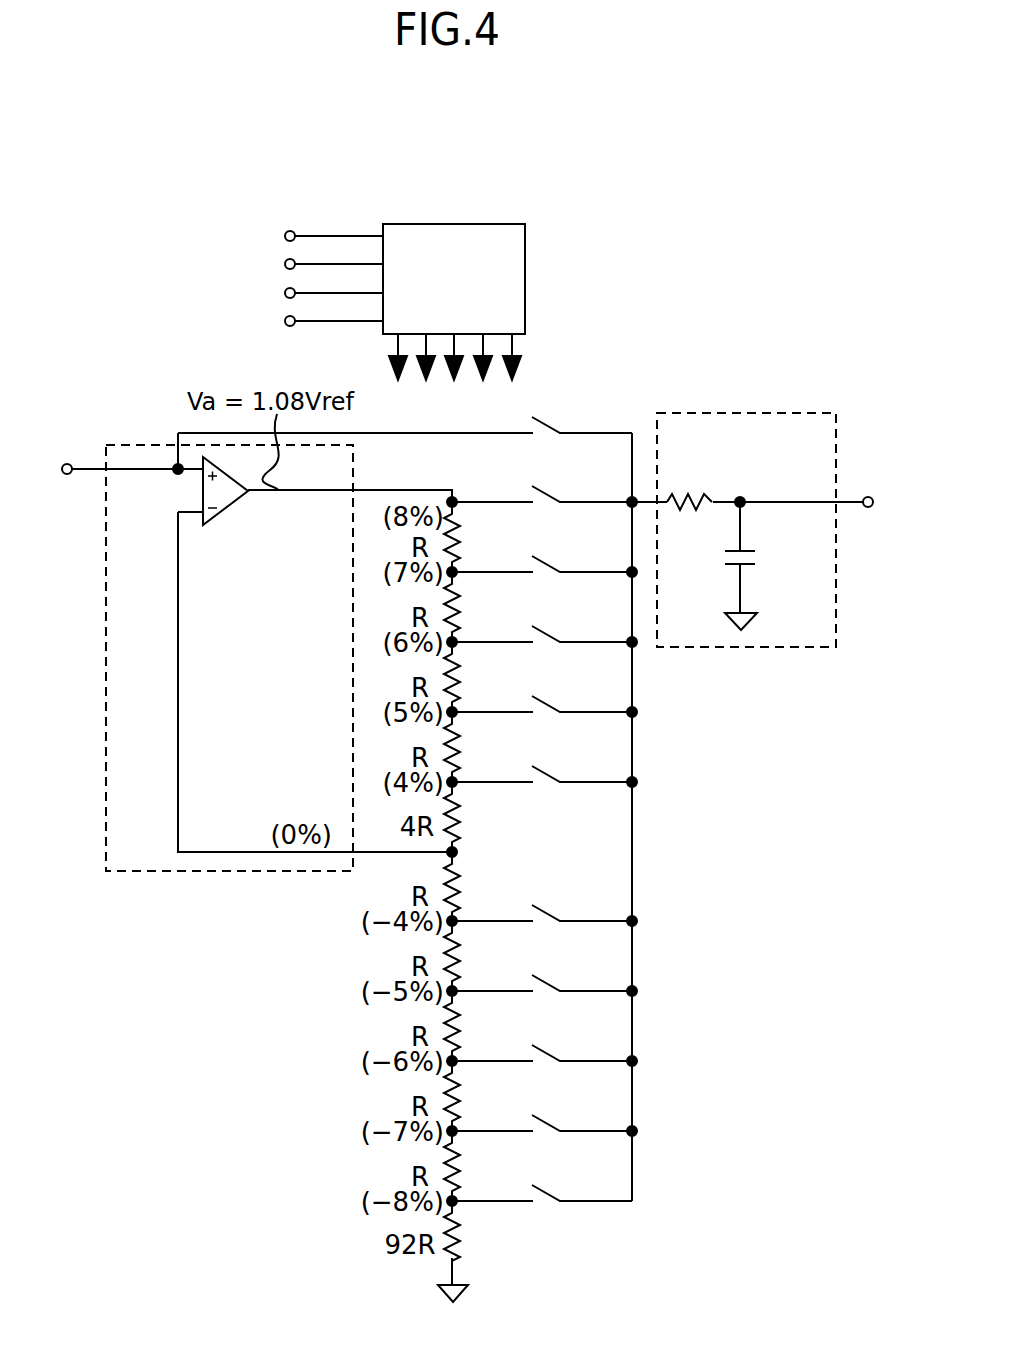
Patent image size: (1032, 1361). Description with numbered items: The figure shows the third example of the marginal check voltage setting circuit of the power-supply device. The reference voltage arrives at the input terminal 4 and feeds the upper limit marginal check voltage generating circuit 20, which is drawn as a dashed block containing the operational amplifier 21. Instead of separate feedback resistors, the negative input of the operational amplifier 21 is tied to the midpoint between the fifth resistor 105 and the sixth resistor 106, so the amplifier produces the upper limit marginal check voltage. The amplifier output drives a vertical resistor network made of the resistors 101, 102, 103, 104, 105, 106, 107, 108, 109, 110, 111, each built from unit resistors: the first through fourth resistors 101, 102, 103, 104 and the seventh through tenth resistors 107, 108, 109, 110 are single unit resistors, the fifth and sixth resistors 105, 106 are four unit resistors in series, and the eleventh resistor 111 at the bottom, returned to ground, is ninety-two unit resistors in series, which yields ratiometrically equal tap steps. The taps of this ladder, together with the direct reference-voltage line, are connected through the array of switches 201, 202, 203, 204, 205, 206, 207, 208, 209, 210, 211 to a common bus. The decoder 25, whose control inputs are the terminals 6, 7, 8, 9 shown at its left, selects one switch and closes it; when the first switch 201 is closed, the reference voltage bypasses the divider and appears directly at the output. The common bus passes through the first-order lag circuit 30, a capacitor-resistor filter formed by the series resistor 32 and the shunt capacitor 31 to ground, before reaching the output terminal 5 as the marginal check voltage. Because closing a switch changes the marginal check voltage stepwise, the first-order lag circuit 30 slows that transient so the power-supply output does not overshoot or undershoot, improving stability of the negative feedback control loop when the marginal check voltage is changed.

The input terminal 4 is at (65, 476).
The output terminal 5 is at (874, 502).
The control input terminal 6 is at (285, 236).
The control input terminal 7 is at (285, 264).
The control input terminal 8 is at (285, 293).
The control input terminal 9 is at (285, 321).
The upper limit marginal check voltage generating circuit 20 is at (124, 445).
The operational amplifier 21 is at (203, 493).
The decoder 25 is at (447, 224).
The first-order lag circuit 30 is at (762, 413).
The capacitor 31 is at (758, 557).
The resistor 32 is at (690, 492).
The first resistor 101 is at (462, 538).
The second resistor 102 is at (462, 608).
The third resistor 103 is at (462, 678).
The fourth resistor 104 is at (462, 748).
The fifth resistor 105 is at (462, 818).
The sixth resistor 106 is at (462, 888).
The seventh resistor 107 is at (462, 957).
The eighth resistor 108 is at (462, 1027).
The ninth resistor 109 is at (462, 1097).
The tenth resistor 110 is at (462, 1167).
The eleventh resistor 111 is at (462, 1237).
The first switch 201 is at (547, 424).
The second switch 202 is at (547, 493).
The third switch 203 is at (547, 563).
The fourth switch 204 is at (547, 633).
The fifth switch 205 is at (547, 703).
The sixth switch 206 is at (547, 773).
The seventh switch 207 is at (547, 912).
The eighth switch 208 is at (547, 982).
The ninth switch 209 is at (547, 1052).
The tenth switch 210 is at (547, 1122).
The eleventh switch 211 is at (547, 1192).